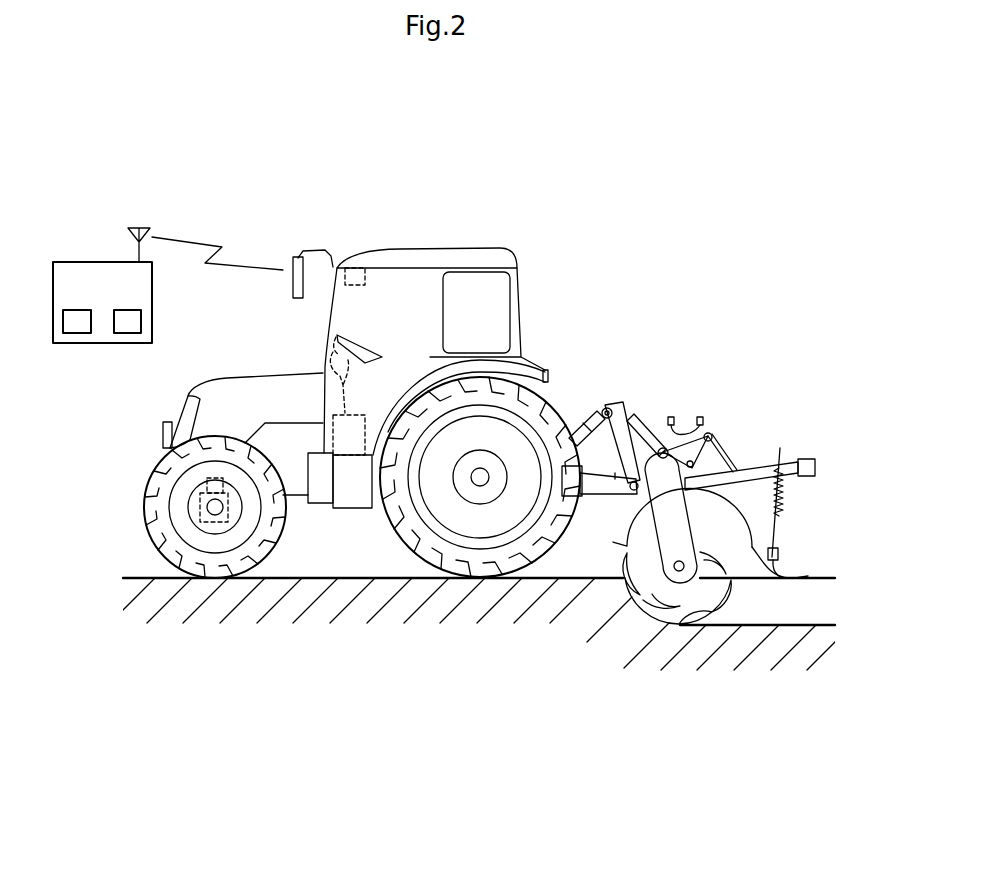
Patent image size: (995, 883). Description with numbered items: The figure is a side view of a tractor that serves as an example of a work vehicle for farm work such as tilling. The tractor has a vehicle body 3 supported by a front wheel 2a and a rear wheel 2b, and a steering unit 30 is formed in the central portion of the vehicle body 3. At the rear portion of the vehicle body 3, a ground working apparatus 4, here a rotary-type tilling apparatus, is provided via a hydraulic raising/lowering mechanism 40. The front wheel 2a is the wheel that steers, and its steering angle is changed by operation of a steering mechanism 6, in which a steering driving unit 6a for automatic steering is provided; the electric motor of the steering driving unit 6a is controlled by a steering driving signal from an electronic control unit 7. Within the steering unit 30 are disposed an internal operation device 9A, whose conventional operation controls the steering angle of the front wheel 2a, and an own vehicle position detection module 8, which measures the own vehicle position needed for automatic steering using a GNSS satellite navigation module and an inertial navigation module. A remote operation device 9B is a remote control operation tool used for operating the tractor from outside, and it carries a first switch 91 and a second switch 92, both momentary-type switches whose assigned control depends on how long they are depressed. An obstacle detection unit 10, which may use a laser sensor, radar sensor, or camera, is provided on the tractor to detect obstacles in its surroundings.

The front wheel 2a is at (212, 577).
The rear wheel 2b is at (490, 577).
The vehicle body 3 is at (329, 514).
The ground working apparatus 4 is at (679, 625).
The steering mechanism 6 is at (200, 503).
The steering driving unit 6a is at (207, 478).
The electronic control unit 7 is at (335, 417).
The own vehicle position detection module 8 is at (352, 268).
The internal operation device 9A is at (357, 372).
The remote operation device 9B is at (96, 261).
The obstacle detection unit 10 is at (163, 432).
The steering unit 30 is at (378, 332).
The hydraulic raising/lowering mechanism 40 is at (650, 397).
The first switch 91 is at (78, 333).
The second switch 92 is at (127, 333).